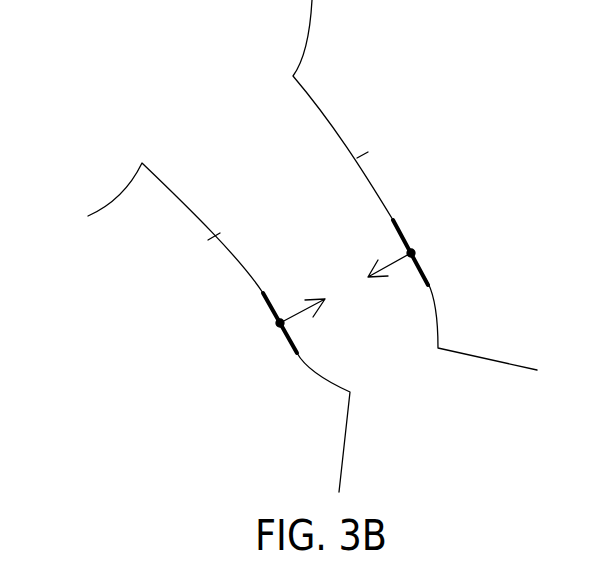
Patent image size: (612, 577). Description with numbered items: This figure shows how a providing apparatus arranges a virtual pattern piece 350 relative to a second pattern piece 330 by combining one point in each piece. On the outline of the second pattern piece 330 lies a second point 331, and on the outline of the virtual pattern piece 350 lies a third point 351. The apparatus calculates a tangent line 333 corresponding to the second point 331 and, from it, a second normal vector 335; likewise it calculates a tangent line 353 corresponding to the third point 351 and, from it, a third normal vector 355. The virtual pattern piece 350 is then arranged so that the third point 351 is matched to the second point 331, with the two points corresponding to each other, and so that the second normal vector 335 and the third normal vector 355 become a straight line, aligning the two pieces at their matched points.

The second pattern piece 330 is at (120, 190).
The second point 331 is at (275, 322).
The tangent line 333 is at (293, 341).
The second normal vector 335 is at (302, 308).
The virtual pattern piece 350 is at (300, 62).
The third point 351 is at (414, 247).
The tangent line 353 is at (423, 268).
The third normal vector 355 is at (382, 262).